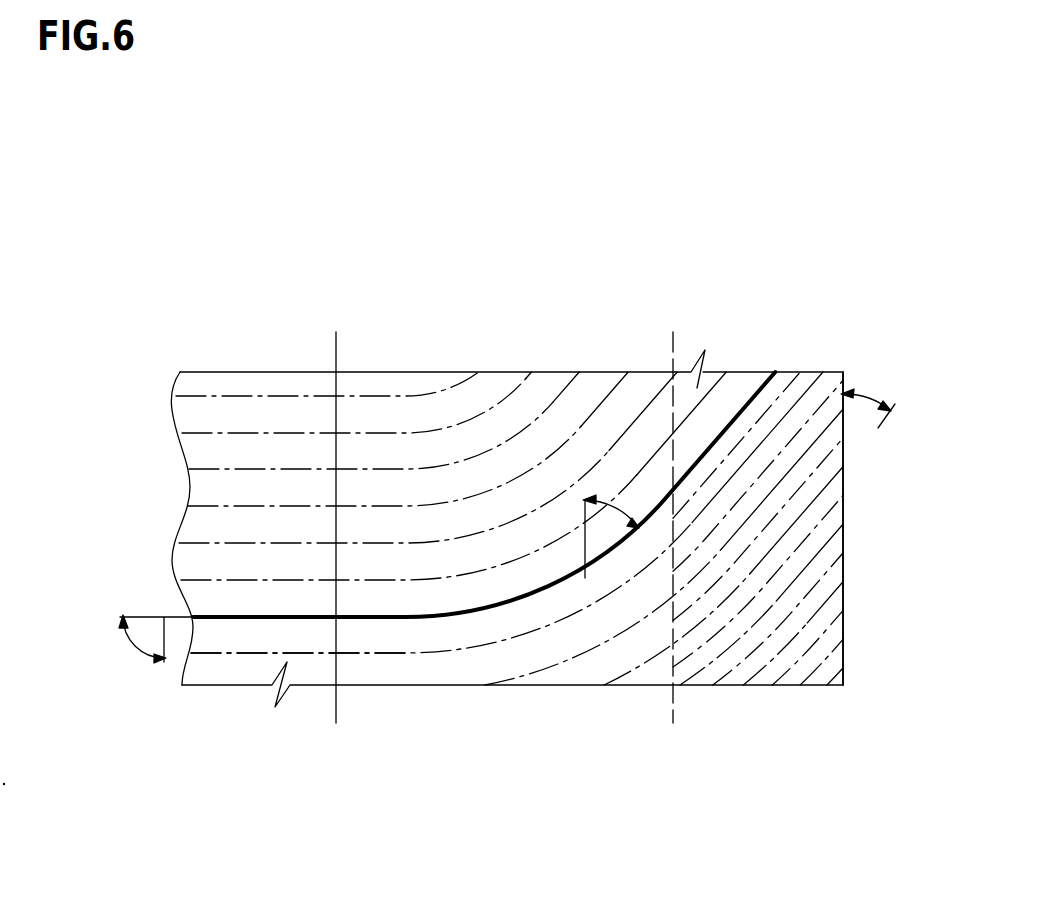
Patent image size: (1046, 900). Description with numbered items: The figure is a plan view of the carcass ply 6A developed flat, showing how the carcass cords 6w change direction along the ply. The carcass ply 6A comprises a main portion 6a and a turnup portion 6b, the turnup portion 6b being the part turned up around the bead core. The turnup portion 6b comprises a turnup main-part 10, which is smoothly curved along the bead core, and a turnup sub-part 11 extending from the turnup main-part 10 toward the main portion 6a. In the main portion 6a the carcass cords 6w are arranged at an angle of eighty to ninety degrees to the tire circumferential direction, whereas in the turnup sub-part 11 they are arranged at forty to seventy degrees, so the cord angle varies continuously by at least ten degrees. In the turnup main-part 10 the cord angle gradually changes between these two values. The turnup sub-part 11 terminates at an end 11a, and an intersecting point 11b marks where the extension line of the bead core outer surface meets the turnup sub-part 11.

The carcass ply 6A is at (397, 155).
The main portion 6a is at (260, 324).
The turnup portion 6b is at (434, 290).
The carcass cords 6w is at (476, 652).
The turnup main-part 10 is at (663, 323).
The turnup sub-part 11 is at (837, 323).
The end of the turnup sub-part 11a is at (843, 687).
The intersecting point 11b is at (673, 698).